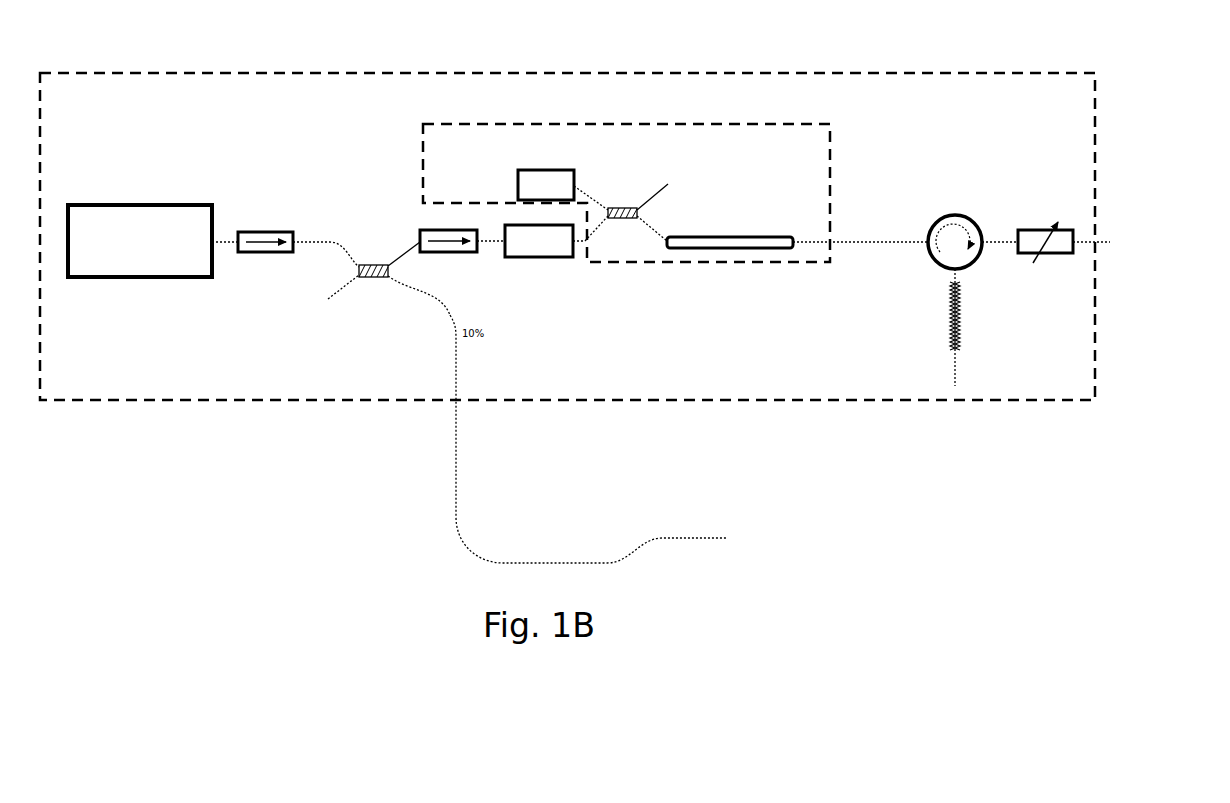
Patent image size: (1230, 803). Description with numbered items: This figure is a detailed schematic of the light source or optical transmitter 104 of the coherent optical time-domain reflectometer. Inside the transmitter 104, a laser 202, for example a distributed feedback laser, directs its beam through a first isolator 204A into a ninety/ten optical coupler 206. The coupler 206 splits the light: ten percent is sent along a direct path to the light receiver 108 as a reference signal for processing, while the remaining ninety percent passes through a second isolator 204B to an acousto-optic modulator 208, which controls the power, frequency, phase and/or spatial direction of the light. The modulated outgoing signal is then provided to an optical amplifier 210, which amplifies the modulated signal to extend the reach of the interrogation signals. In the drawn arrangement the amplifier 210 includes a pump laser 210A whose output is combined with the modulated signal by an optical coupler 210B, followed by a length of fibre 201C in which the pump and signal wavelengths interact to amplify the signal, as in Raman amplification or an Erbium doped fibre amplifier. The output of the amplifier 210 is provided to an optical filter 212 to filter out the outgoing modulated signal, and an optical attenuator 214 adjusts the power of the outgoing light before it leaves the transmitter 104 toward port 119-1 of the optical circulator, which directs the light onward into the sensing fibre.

The light source 104 is at (567, 223).
The laser 202 is at (140, 225).
The first isolator 204A is at (264, 229).
The second isolator 204B is at (442, 245).
The optical coupler 206 is at (371, 284).
The acousto-optic modulator 208 is at (563, 269).
The optical amplifier 210 is at (626, 178).
The pump laser 210A is at (501, 172).
The optical coupler 210B is at (620, 219).
The doped fiber 201C is at (730, 227).
The optical filter 212 is at (950, 279).
The optical attenuator 214 is at (1041, 217).
The light receiver 108 is at (698, 439).
The port 119-1 is at (1138, 244).